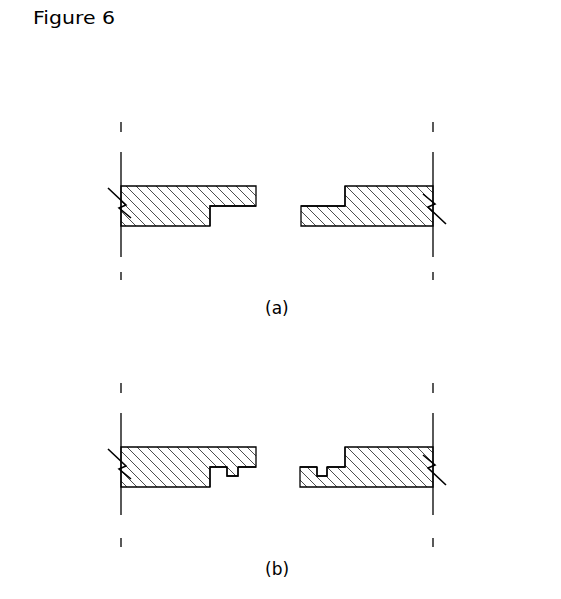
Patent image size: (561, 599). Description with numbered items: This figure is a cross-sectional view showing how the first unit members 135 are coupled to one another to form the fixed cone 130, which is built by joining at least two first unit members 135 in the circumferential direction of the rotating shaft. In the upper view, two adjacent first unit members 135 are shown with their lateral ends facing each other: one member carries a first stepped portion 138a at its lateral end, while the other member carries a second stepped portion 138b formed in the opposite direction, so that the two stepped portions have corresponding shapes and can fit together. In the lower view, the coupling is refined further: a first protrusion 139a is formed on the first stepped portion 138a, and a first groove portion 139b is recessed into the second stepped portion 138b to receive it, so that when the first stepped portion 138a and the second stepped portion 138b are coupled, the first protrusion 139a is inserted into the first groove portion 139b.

The fixed cone 130 is at (162, 84).
The first unit member 135 is at (176, 194).
The first stepped portion 138a is at (228, 207).
The second stepped portion 138b is at (323, 203).
The first protrusion 139a is at (232, 476).
The first groove portion 139b is at (318, 467).